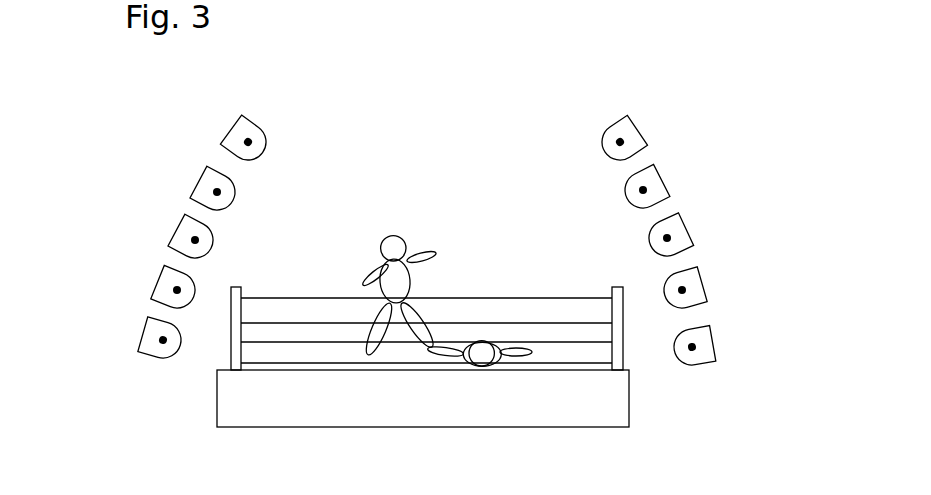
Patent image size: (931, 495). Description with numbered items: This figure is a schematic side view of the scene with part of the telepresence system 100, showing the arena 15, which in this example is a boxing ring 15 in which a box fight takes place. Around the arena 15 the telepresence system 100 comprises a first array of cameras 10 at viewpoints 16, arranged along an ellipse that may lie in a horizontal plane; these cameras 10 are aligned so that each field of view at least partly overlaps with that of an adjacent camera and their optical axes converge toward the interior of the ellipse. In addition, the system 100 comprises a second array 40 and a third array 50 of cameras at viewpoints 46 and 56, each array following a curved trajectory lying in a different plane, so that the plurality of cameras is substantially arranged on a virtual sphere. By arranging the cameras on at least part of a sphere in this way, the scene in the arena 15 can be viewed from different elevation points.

The telepresence system 100 is at (678, 92).
The cameras 10 is at (195, 240).
The viewpoints 16 is at (178, 226).
The second array 40 is at (177, 290).
The viewpoints 46 is at (156, 279).
The third array 50 is at (217, 192).
The viewpoints 56 is at (203, 172).
The arena 15 is at (220, 428).